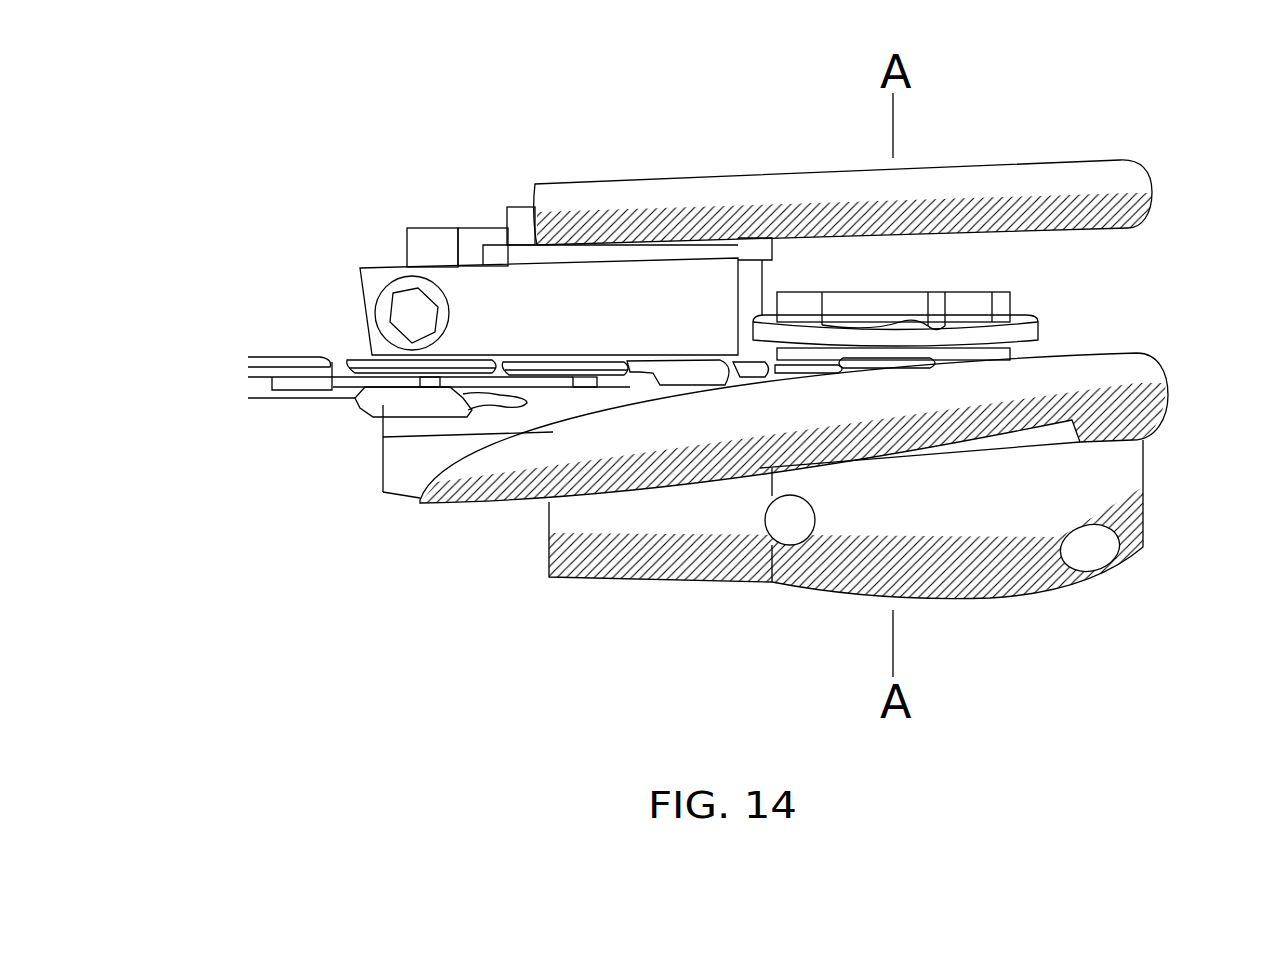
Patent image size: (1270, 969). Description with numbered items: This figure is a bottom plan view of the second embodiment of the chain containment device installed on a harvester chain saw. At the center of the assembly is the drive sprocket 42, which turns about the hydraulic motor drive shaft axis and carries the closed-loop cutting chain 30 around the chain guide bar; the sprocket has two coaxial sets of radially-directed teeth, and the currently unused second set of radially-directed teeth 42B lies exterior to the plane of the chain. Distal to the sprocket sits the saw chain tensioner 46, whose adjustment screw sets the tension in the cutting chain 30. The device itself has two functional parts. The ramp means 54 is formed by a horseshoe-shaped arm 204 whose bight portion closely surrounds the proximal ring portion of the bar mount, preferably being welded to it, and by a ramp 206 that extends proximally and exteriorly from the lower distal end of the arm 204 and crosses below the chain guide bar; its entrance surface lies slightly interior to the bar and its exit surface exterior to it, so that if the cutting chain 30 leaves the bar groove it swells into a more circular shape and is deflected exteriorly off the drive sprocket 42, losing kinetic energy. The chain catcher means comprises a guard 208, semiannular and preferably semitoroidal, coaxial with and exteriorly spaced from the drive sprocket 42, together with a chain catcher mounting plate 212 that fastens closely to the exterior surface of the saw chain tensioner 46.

The cutting chain 30 is at (323, 357).
The saw chain tensioner 46 is at (473, 290).
The chain catcher mounting plate 212 is at (527, 253).
The guard 208 is at (708, 195).
The second set of radially-directed teeth 42B is at (975, 305).
The drive sprocket 42 is at (1023, 333).
The ramp 206 is at (1042, 402).
The horseshoe-shaped arm 204 is at (930, 557).
The ramp means 54 is at (473, 520).